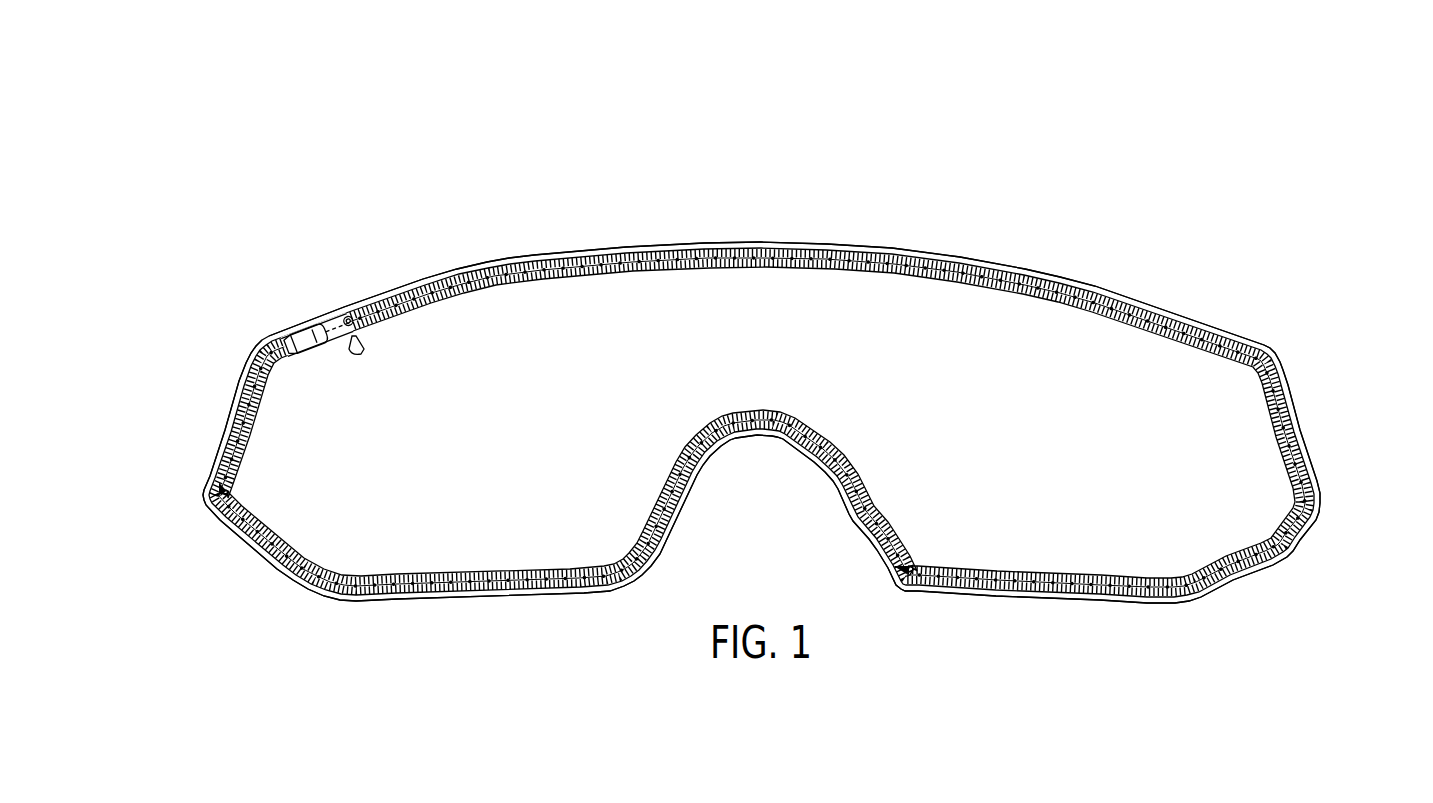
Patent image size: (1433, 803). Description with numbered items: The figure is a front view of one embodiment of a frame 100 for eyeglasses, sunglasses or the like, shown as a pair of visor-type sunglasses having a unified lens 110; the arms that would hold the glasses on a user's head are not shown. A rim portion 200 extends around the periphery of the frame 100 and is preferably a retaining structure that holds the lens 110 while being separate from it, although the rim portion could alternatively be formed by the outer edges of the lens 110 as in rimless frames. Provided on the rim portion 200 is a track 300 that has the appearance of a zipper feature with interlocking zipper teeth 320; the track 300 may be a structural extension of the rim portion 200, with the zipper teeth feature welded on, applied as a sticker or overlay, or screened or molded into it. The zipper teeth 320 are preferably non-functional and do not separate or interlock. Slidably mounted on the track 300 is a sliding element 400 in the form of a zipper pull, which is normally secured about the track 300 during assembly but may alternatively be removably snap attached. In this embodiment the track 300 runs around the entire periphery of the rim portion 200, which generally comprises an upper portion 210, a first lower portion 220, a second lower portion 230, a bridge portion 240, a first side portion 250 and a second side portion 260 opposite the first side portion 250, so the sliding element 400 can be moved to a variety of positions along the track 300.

The frame 100 is at (1034, 98).
The lens 110 is at (768, 383).
The rim portion 200 is at (1207, 322).
The upper portion 210 is at (766, 165).
The first lower portion 220 is at (441, 638).
The second lower portion 230 is at (1031, 638).
The bridge portion 240 is at (767, 526).
The first side portion 250 is at (146, 484).
The second side portion 260 is at (1354, 454).
The track 300 is at (508, 272).
The zipper teeth 320 is at (564, 258).
The sliding element 400 is at (333, 299).